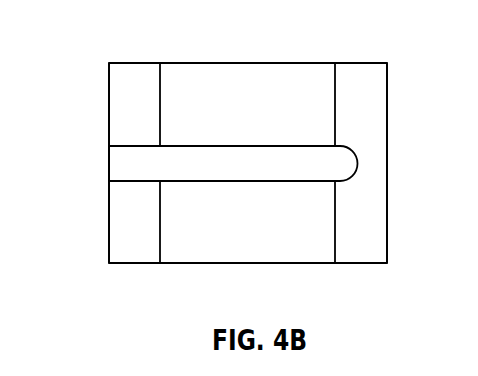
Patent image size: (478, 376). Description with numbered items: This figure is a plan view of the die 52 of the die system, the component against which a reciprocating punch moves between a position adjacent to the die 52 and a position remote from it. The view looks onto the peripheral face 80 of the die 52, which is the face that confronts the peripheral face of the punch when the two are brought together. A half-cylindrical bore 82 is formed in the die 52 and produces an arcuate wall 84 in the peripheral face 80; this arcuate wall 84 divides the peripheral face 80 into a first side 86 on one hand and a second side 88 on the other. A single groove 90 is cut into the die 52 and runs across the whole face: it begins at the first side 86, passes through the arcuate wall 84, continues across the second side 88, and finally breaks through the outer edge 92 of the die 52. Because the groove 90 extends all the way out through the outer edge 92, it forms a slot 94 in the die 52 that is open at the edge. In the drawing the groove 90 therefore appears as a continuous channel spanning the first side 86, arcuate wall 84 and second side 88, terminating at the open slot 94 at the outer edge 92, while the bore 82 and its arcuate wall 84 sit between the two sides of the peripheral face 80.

The die 52 is at (375, 77).
The peripheral face 80 is at (380, 250).
The half-cylindrical bore 82 is at (318, 250).
The arcuate wall 84 is at (185, 80).
The first side 86 is at (375, 133).
The second side 88 is at (122, 105).
The groove 90 is at (342, 166).
The outer edge 92 is at (104, 203).
The slot 94 is at (120, 167).